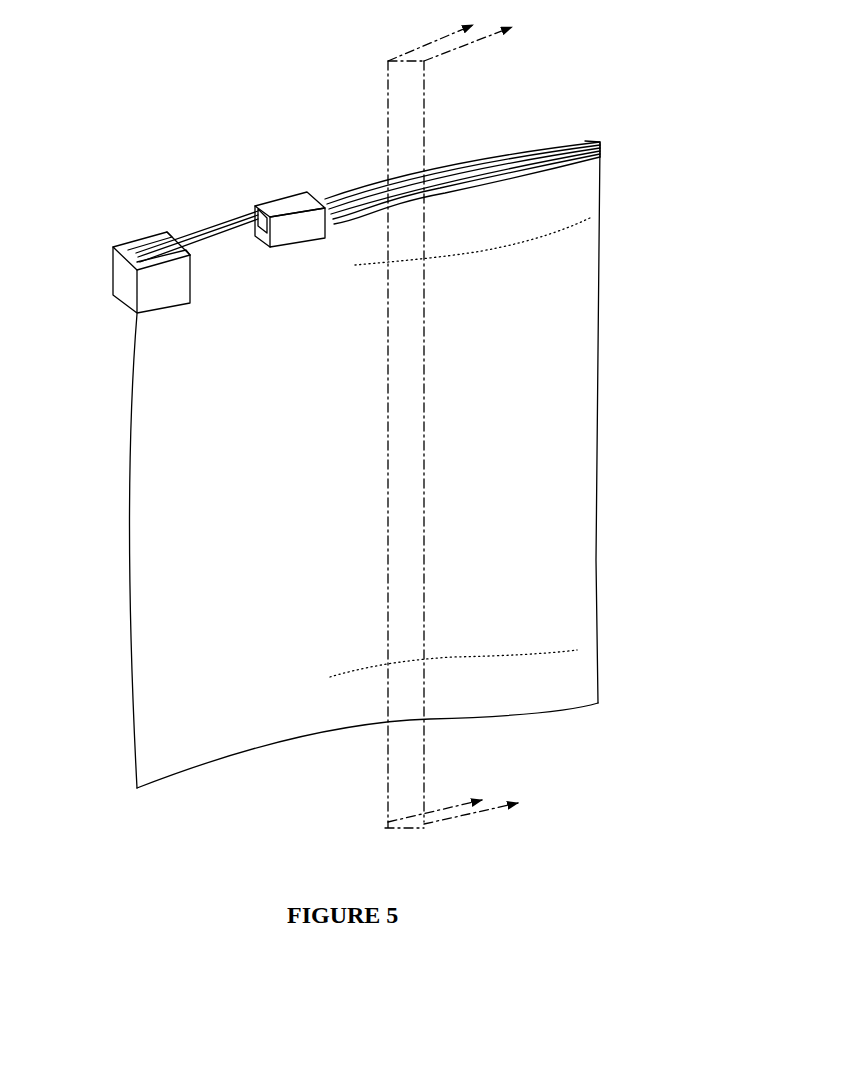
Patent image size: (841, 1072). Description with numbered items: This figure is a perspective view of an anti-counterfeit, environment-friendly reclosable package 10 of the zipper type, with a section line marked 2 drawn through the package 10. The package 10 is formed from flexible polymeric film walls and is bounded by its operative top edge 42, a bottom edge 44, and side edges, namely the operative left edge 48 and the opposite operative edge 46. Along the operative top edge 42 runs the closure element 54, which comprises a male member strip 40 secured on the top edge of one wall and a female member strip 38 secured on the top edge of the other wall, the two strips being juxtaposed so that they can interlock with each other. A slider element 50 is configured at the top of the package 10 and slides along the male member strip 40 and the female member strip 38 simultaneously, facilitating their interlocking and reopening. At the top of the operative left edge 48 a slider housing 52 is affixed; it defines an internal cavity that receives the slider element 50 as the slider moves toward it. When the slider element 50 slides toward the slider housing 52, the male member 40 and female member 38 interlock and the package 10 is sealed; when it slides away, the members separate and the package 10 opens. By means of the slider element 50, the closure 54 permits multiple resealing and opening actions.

The package 10 is at (372, 442).
The section line 2- 2 is at (466, 414).
The female member strip 38 is at (453, 153).
The male member strip 40 is at (498, 185).
The operative top edge 42 is at (437, 182).
The bottom edge of bag 44 is at (332, 733).
The operative edge 46 is at (603, 463).
The operative left edge 48 is at (128, 502).
The slider element 50 is at (283, 200).
The slider housing 52 is at (128, 242).
The closure element 54 is at (583, 145).